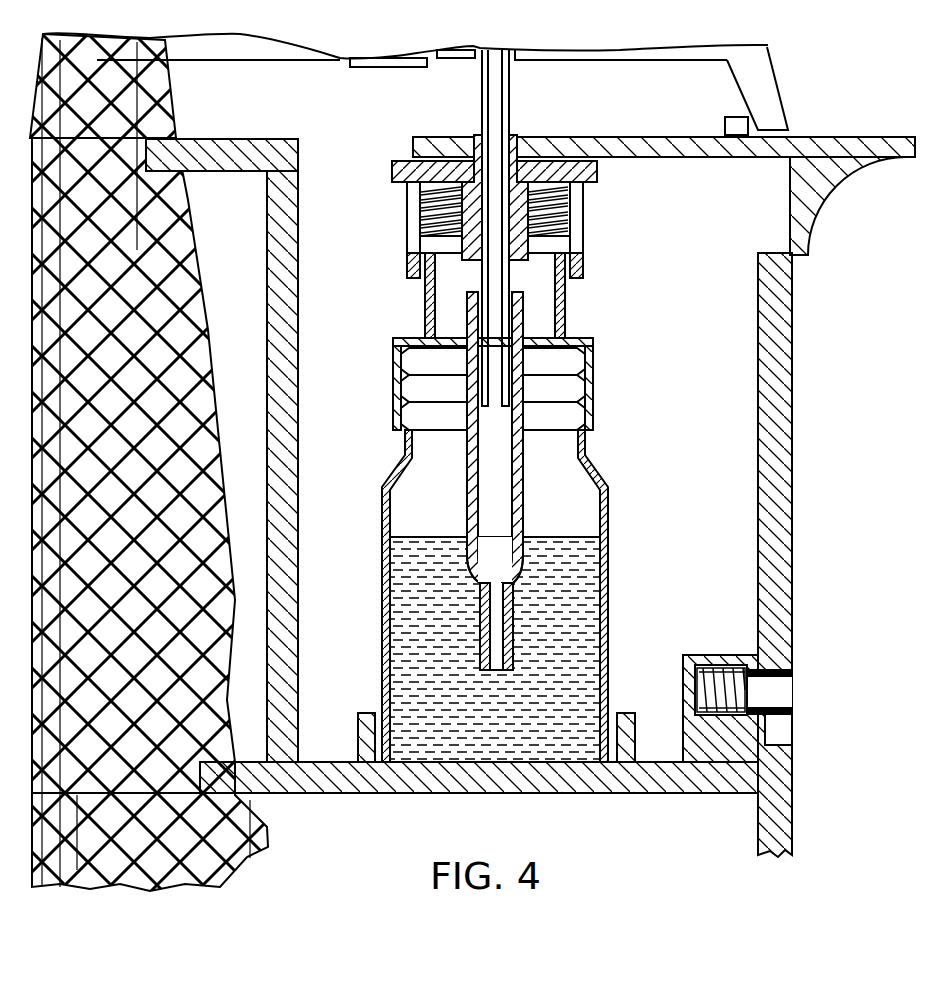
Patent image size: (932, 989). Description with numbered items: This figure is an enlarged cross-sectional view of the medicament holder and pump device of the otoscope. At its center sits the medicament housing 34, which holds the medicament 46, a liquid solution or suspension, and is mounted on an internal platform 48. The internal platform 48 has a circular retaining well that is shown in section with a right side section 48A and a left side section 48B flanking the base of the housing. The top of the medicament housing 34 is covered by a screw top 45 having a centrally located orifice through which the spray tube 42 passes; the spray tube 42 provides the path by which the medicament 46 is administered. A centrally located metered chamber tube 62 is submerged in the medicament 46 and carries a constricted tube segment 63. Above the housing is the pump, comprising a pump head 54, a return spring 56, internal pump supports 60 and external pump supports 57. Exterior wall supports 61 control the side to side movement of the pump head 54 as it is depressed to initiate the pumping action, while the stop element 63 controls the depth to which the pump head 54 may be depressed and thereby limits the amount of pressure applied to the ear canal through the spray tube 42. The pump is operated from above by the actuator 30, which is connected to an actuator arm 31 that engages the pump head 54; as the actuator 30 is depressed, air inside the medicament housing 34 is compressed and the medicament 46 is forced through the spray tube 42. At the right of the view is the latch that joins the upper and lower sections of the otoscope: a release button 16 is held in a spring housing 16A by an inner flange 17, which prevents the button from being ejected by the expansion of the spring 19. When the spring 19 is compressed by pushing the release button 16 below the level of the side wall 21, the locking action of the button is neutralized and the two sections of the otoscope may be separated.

The release button 16 is at (785, 682).
The spring housing 16A is at (722, 655).
The inner flange 17 is at (748, 684).
The spring 19 is at (710, 716).
The side wall 21 is at (755, 665).
The actuator 30 is at (840, 136).
The actuator arm 31 is at (430, 138).
The medicament housing 34 is at (393, 517).
The spray tube 42 is at (495, 99).
The screw top 45 is at (393, 394).
The medicament 46 is at (578, 598).
The internal platform 48 is at (505, 742).
The right side section 48A is at (628, 742).
The left side section 48B is at (365, 762).
The pump head 54 is at (597, 170).
The return spring 56 is at (553, 208).
The external pump supports 57 is at (408, 208).
The internal pump supports 60 is at (472, 277).
The exterior wall supports 61 is at (423, 321).
The metered chamber tube 62 is at (495, 491).
The stop element 63 is at (470, 306).